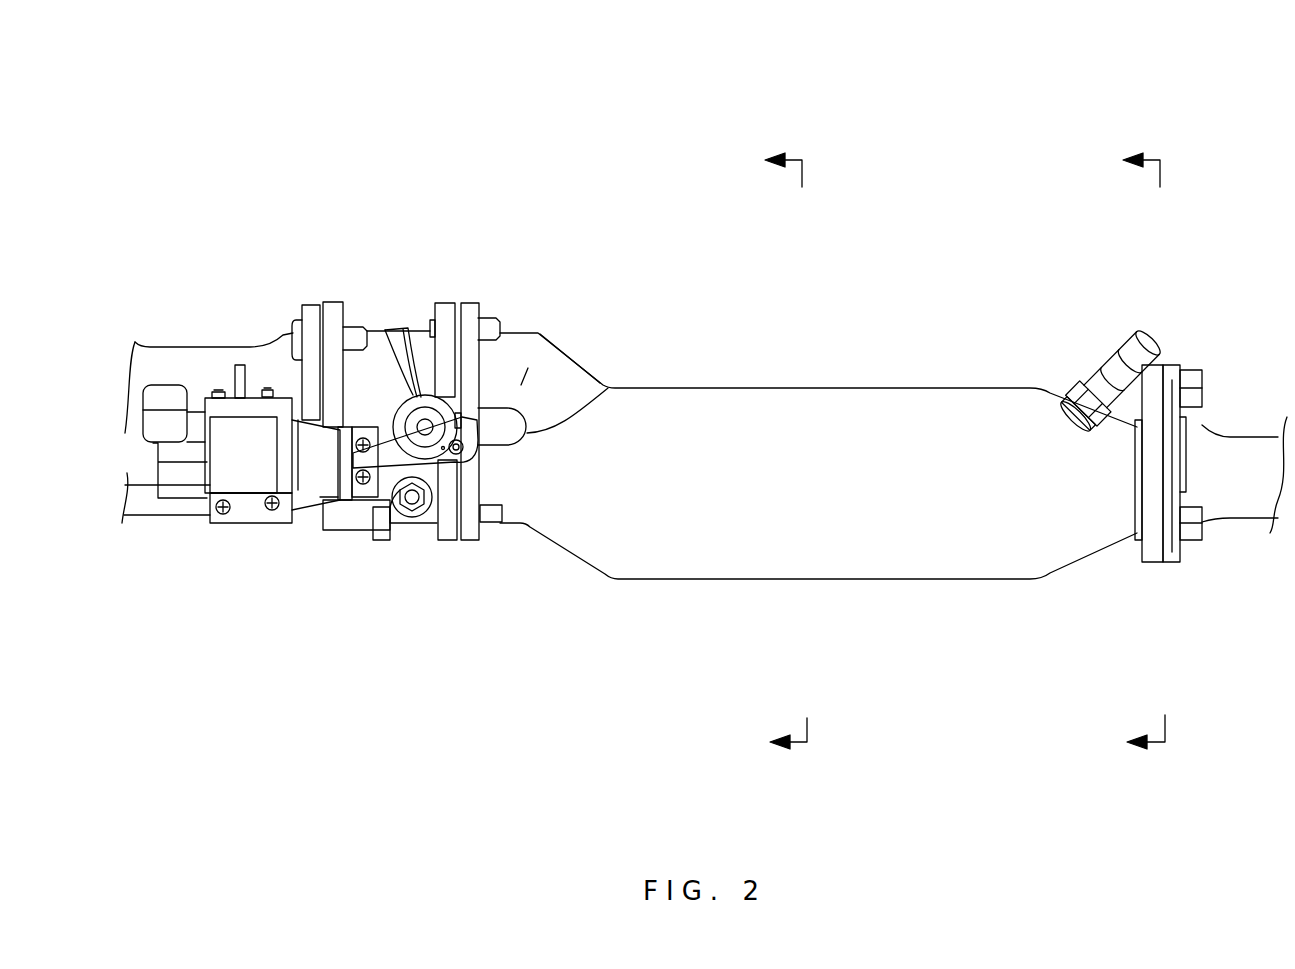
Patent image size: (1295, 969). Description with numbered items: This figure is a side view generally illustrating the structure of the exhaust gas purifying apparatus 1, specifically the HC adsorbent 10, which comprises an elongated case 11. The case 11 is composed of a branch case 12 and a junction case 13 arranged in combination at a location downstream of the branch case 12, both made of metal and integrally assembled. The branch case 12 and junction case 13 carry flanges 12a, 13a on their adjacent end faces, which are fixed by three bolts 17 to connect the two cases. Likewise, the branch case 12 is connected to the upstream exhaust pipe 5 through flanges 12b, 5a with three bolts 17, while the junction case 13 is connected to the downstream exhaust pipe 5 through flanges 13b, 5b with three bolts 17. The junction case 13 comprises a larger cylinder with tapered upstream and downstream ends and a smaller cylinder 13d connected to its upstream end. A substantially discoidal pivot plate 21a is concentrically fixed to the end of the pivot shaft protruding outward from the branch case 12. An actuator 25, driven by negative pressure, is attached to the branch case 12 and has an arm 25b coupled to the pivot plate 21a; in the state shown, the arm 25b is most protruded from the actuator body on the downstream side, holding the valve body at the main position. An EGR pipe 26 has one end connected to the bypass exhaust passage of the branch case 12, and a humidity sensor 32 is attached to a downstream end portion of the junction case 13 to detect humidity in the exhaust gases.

The outboard motor / engine unit 1 is at (512, 92).
The HC adsorbent 10 is at (926, 194).
The case 11 is at (745, 387).
The junction case 13 is at (877, 386).
The smaller cylinder 13d is at (572, 355).
The flange 13b is at (1148, 563).
The flange 13a is at (470, 302).
The branch case 12 is at (348, 533).
The flange 12a is at (438, 302).
The flange 12b is at (333, 303).
The exhaust pipe 5 is at (188, 348).
The flange 5a is at (317, 303).
The flange 5b is at (1167, 563).
The bolts 17 is at (293, 320).
The pivot plate 21a is at (468, 432).
The actuator 25 is at (238, 512).
The arm 25b is at (410, 508).
The EGR pipe 26 is at (147, 512).
The humidity sensor 32 is at (1133, 338).